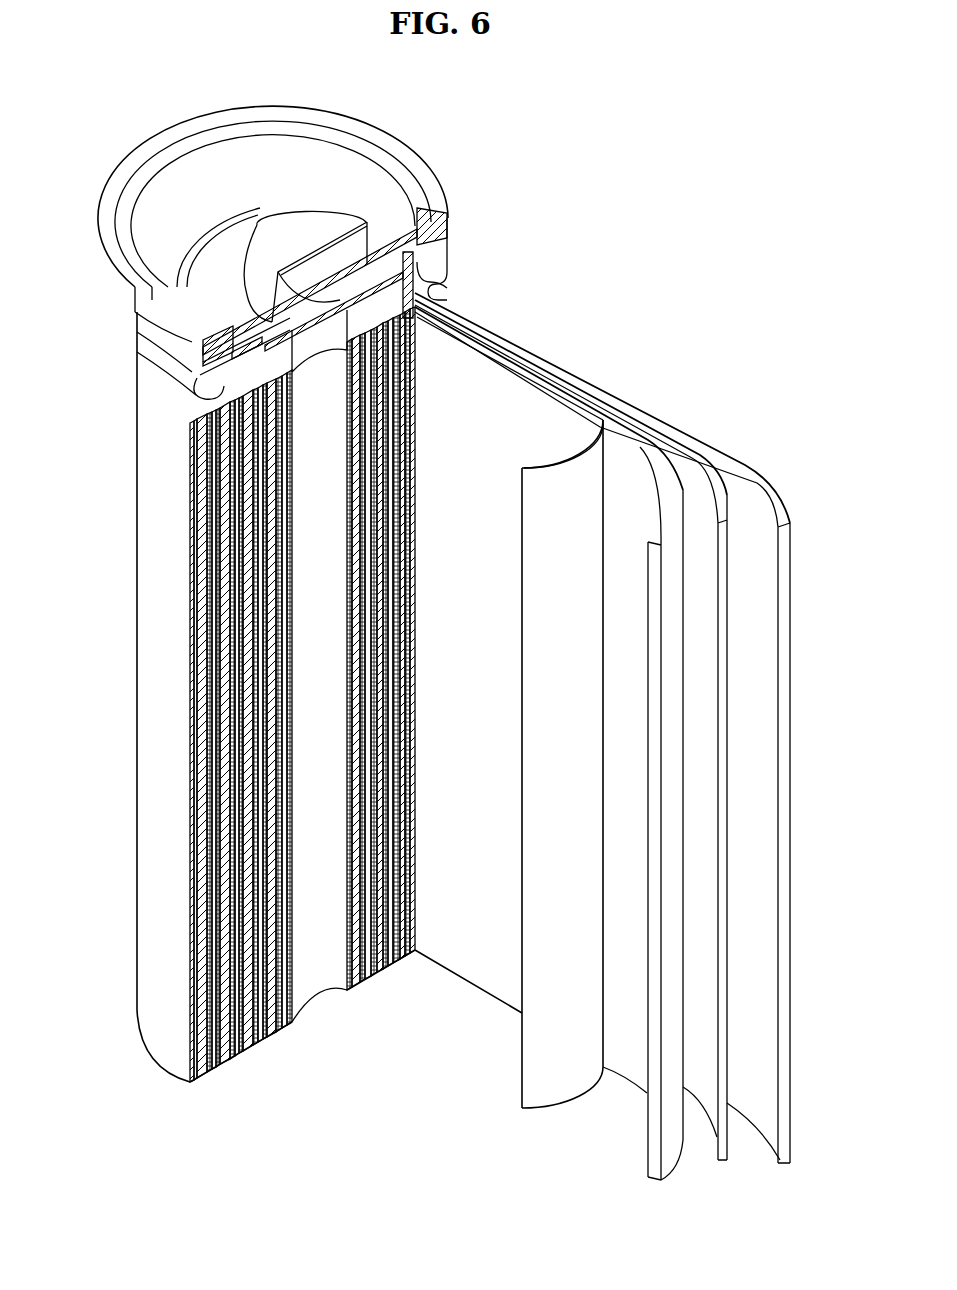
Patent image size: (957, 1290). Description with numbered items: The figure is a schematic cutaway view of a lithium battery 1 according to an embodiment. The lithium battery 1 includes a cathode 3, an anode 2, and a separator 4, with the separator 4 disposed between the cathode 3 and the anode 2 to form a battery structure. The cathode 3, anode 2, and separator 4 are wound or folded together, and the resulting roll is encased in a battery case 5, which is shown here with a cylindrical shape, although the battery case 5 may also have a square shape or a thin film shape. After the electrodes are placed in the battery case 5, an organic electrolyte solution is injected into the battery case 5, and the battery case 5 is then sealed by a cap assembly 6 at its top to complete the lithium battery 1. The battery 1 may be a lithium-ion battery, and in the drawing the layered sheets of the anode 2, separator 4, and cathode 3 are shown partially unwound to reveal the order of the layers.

The lithium battery 1 is at (630, 201).
The anode 2 is at (758, 482).
The cathode 3 is at (668, 465).
The separator 4 is at (566, 470).
The battery case 5 is at (142, 685).
The cap assembly 6 is at (285, 232).